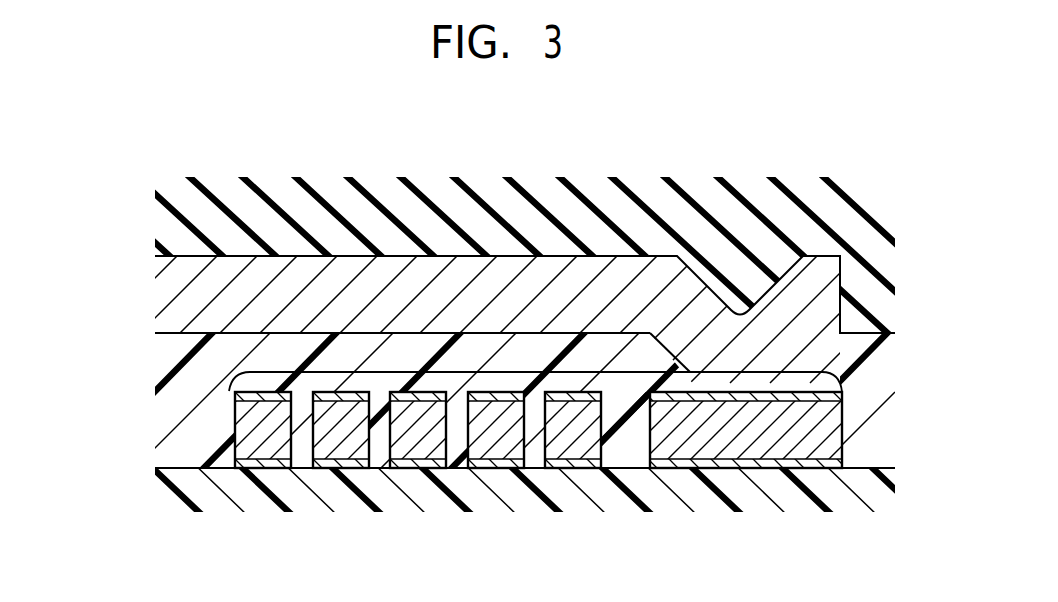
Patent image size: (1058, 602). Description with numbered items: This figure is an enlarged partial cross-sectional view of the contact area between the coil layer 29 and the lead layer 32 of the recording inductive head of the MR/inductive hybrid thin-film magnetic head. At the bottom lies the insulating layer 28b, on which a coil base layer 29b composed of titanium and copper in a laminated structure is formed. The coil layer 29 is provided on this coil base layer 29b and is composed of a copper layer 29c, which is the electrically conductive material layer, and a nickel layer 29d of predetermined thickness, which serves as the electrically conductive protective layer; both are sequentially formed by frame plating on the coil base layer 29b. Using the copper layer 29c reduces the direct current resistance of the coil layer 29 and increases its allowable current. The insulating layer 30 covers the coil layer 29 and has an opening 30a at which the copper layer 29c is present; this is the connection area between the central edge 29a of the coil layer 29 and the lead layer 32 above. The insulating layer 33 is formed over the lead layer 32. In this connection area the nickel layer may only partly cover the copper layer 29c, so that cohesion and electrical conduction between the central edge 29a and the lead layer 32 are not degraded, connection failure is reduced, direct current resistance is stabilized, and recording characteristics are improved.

The insulating layer 28b is at (460, 494).
The coil layer 29 is at (528, 372).
The central edge of the coil layer 29a is at (650, 427).
The coil base layer 29b is at (253, 472).
The copper layer 29c is at (265, 426).
The nickel layer 29d is at (230, 397).
The insulating layer 30 is at (232, 359).
The opening 30a is at (657, 340).
The lead layer 32 is at (233, 293).
The insulating layer 33 is at (225, 220).